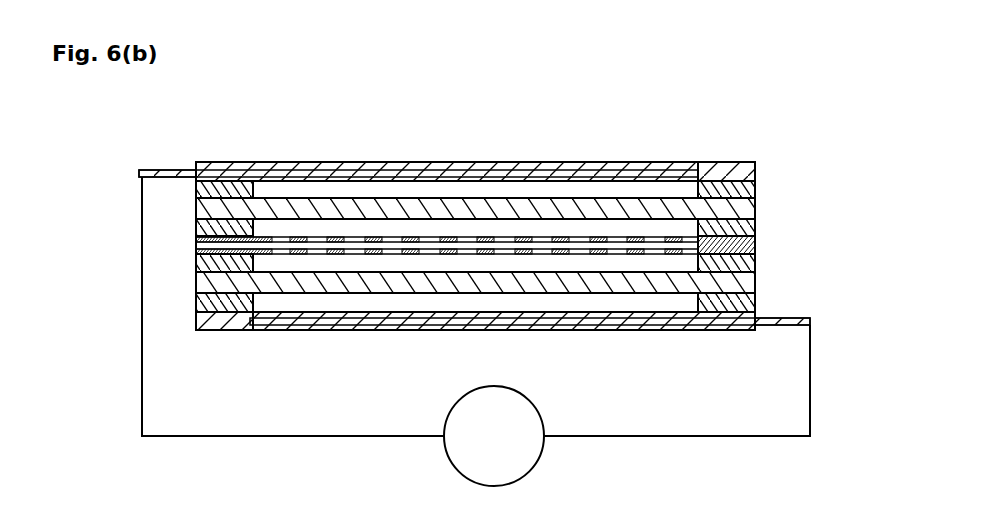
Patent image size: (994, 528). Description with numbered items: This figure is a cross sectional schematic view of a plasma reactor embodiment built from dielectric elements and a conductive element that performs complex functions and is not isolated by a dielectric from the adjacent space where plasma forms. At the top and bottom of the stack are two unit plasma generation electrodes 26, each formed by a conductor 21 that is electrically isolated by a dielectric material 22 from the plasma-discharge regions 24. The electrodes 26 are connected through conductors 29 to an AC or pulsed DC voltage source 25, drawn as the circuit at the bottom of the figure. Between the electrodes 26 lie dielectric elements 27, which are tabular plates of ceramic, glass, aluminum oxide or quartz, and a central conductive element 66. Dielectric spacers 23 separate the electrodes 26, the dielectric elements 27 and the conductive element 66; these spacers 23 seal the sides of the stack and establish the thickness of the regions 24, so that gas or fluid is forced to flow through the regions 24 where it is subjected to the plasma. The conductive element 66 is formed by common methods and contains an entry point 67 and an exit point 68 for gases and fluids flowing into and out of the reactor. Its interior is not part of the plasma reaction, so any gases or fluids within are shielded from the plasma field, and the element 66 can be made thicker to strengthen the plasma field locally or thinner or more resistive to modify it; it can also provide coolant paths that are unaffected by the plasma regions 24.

The conductor 21 is at (167, 168).
The dielectric material 22 is at (728, 168).
The dielectric spacer 23 is at (745, 188).
The plasma-discharge region 24 is at (268, 302).
The AC or pulsed DC voltage source 25 is at (530, 448).
The unit plasma generation electrode 26 is at (398, 162).
The dielectric element 27 is at (745, 208).
The conductor 29 is at (240, 437).
The conductive element 66 is at (748, 250).
The entry point 67 is at (207, 246).
The exit point 68 is at (290, 232).